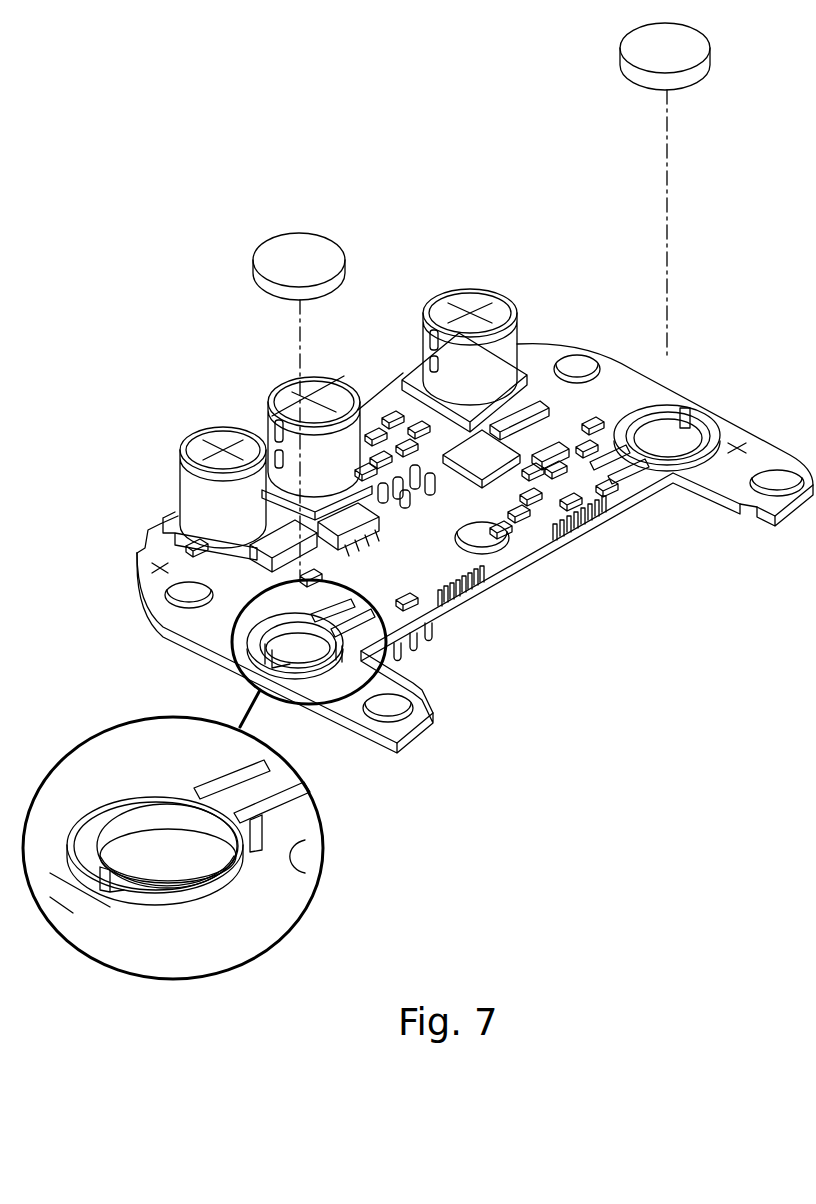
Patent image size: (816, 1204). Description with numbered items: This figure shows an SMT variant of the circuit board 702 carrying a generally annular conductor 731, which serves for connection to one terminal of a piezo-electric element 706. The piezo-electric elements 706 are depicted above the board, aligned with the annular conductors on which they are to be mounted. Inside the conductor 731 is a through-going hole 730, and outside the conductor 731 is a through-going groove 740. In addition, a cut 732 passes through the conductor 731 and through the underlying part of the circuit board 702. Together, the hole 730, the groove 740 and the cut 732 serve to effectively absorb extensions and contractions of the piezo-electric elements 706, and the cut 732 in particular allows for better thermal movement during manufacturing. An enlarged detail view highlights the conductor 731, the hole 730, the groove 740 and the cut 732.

The piezo-electric element 706 is at (658, 55).
The circuit board 702 is at (220, 627).
The through-going hole 730 is at (298, 653).
The annular conductor 731 is at (147, 800).
The cut 732 is at (118, 908).
The through-going groove 740 is at (253, 870).